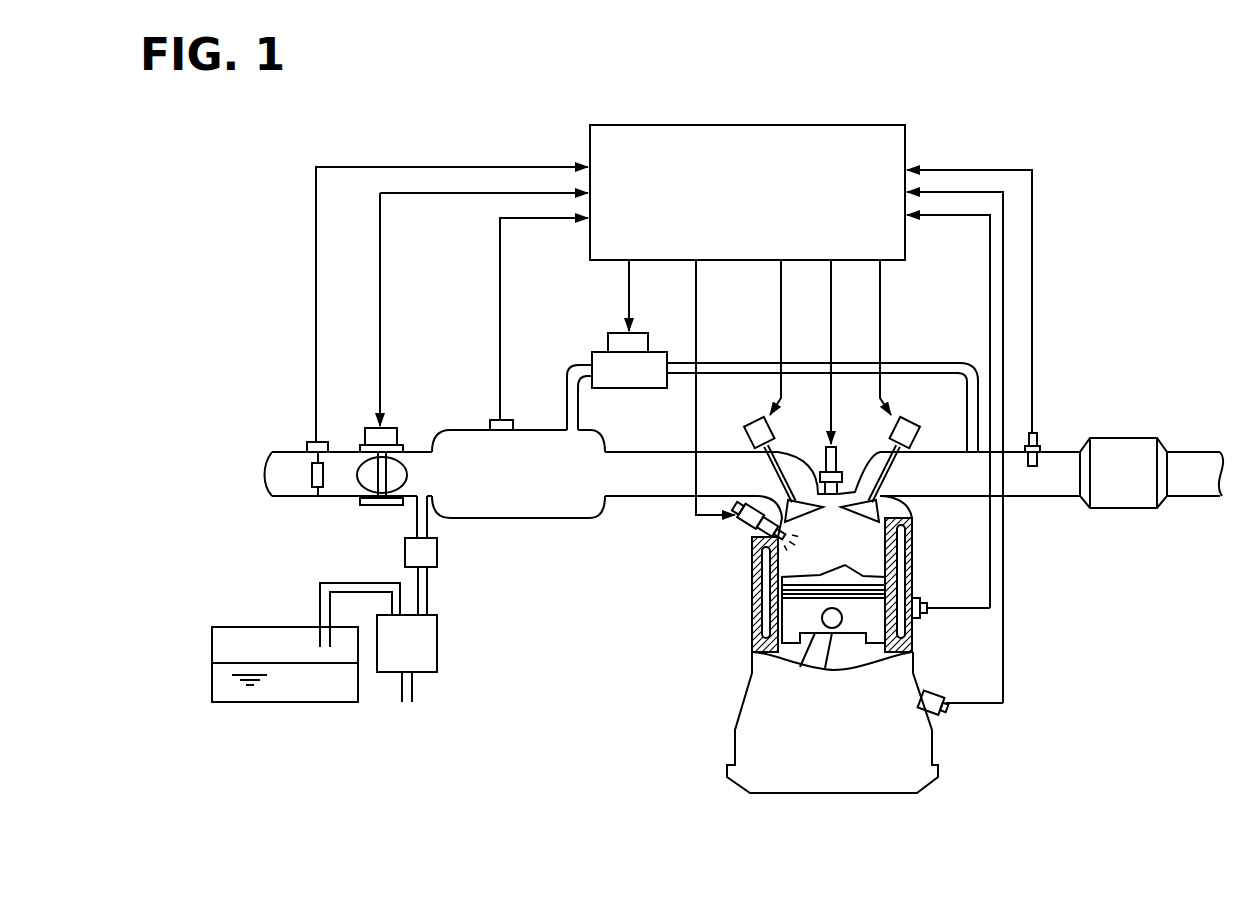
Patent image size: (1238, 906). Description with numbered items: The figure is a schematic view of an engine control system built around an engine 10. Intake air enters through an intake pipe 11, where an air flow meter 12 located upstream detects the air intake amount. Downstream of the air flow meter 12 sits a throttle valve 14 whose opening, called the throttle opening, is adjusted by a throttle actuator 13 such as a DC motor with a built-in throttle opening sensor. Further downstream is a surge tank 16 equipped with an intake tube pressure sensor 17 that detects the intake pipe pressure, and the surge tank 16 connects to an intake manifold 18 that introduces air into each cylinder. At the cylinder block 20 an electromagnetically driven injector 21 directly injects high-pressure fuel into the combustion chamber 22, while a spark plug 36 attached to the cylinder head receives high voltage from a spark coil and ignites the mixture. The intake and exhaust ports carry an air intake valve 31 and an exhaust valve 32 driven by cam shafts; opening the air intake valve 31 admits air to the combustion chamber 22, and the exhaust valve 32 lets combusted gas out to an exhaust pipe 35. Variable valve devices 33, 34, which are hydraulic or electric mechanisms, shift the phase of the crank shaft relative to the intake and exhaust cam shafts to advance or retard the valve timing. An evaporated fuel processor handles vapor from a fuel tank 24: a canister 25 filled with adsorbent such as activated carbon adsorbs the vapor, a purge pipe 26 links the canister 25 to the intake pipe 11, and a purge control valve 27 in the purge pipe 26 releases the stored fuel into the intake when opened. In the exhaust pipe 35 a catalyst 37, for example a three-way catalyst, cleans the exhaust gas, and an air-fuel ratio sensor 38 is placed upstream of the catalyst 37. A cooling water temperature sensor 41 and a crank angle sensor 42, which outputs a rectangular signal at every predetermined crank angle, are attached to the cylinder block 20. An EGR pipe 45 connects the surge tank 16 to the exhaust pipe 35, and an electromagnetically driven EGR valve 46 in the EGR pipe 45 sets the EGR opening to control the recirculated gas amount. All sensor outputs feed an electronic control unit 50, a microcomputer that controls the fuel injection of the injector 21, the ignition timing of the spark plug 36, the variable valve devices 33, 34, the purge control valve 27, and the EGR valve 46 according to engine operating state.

The engine 10 is at (936, 324).
The intake pipe 11 is at (282, 498).
The air flow meter 12 is at (318, 442).
The throttle actuator 13 is at (397, 428).
The throttle valve 14 is at (360, 487).
The surge tank 16 is at (551, 518).
The intake tube pressure sensor 17 is at (510, 420).
The intake manifold 18 is at (630, 452).
The cylinder block 20 is at (913, 580).
The injector 21 is at (752, 533).
The combustion chamber 22 is at (870, 552).
The fuel tank 24 is at (246, 627).
The canister 25 is at (437, 643).
The purge pipe 26 is at (427, 592).
The purge control valve 27 is at (437, 552).
The air intake valve 31 is at (815, 488).
The exhaust valve 32 is at (898, 510).
The variable valve device 33 is at (757, 418).
The variable valve device 34 is at (905, 418).
The exhaust pipe 35 is at (1036, 497).
The spark plug 36 is at (840, 468).
The catalyst 37 is at (1100, 438).
The air-fuel ratio sensor 38 is at (1038, 434).
The cooling water temperature sensor 41 is at (925, 615).
The crank angle sensor 42 is at (930, 690).
The EGR pipe 45 is at (845, 363).
The EGR valve 46 is at (612, 336).
The electronic control unit (ECU) 50 is at (906, 125).